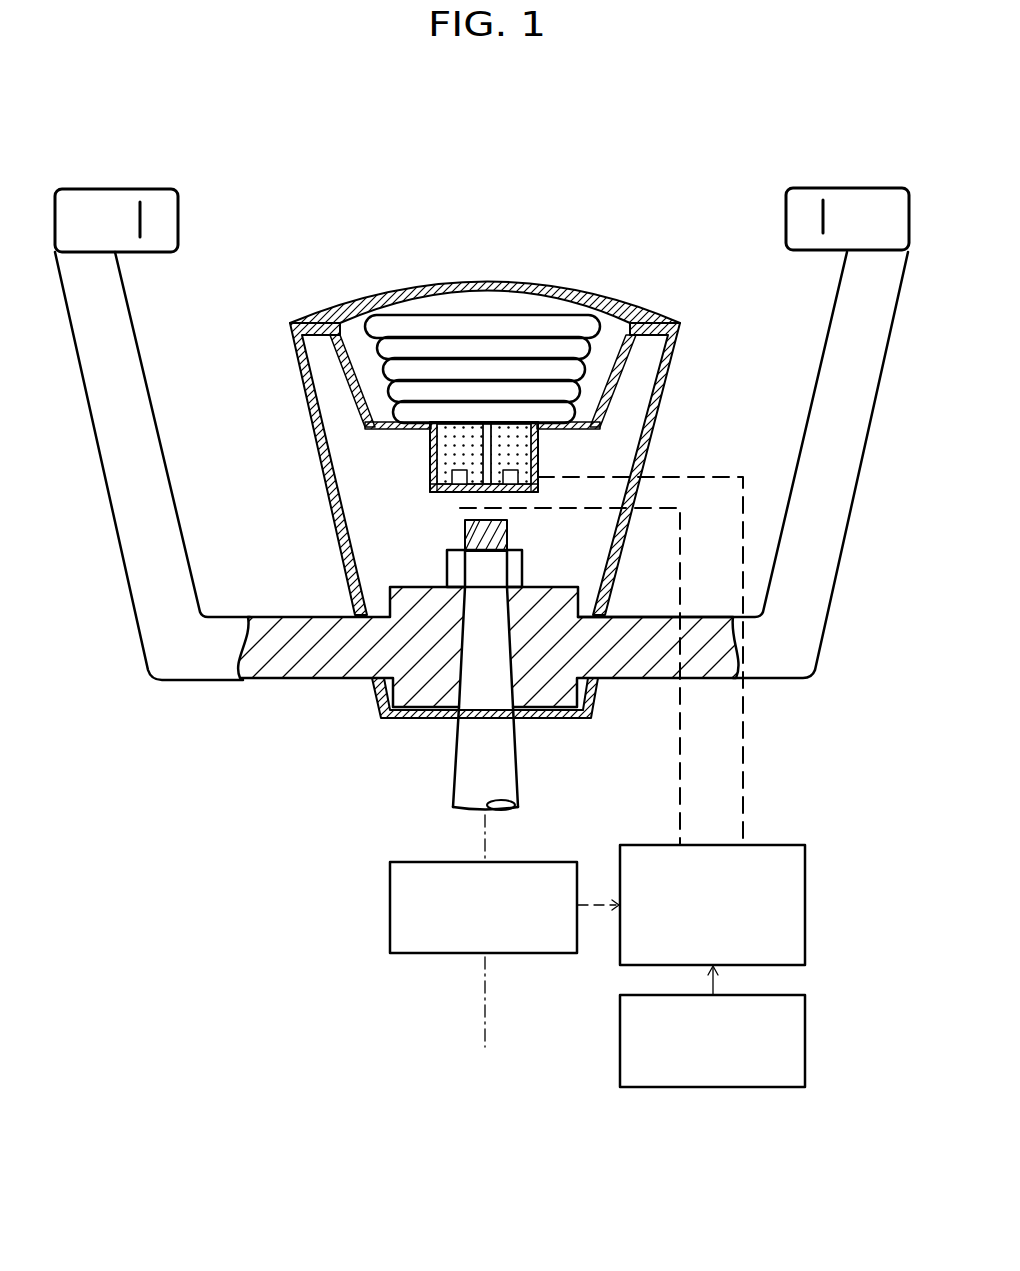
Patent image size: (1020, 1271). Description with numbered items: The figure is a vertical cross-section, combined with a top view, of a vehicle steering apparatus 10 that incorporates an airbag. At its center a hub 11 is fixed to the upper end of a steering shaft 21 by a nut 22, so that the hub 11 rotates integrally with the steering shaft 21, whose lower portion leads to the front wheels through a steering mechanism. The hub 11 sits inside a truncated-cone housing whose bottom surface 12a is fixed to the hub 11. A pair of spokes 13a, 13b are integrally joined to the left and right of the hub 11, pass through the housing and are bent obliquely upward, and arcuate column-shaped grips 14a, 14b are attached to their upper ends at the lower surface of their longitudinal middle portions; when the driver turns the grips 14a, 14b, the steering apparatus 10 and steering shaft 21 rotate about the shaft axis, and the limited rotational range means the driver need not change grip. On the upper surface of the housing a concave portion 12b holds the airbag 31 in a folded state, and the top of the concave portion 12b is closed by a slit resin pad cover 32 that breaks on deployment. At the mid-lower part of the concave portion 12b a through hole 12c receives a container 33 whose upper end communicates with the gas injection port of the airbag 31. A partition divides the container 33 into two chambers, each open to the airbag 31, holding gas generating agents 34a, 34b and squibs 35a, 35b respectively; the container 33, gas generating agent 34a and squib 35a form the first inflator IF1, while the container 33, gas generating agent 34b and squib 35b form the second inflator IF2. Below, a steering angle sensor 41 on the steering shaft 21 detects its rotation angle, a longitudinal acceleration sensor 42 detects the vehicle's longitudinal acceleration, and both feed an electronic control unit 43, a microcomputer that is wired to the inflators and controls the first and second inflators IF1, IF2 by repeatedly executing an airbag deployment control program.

The steering apparatus 10 is at (618, 210).
The hub 11 is at (341, 558).
The bottom surface 12a is at (545, 720).
The concave portion 12b is at (621, 322).
The through hole 12c is at (441, 420).
The spoke 13a is at (152, 397).
The spoke 13b is at (802, 436).
The grip 14a is at (178, 222).
The grip 14b is at (786, 222).
The steering shaft 21 is at (453, 767).
The nut 22 is at (447, 568).
The airbag 31 is at (538, 318).
The pad cover 32 is at (493, 282).
The container 33 is at (445, 492).
The gas generating agent 34a is at (446, 449).
The gas generating agent 34b is at (524, 452).
The squib 35a is at (449, 481).
The squib 35b is at (522, 484).
The steering angle sensor 41 is at (523, 862).
The longitudinal acceleration sensor 42 is at (765, 995).
The electronic control unit 43 is at (765, 845).
The first inflator IF1 is at (356, 473).
The second inflator IF2 is at (606, 462).